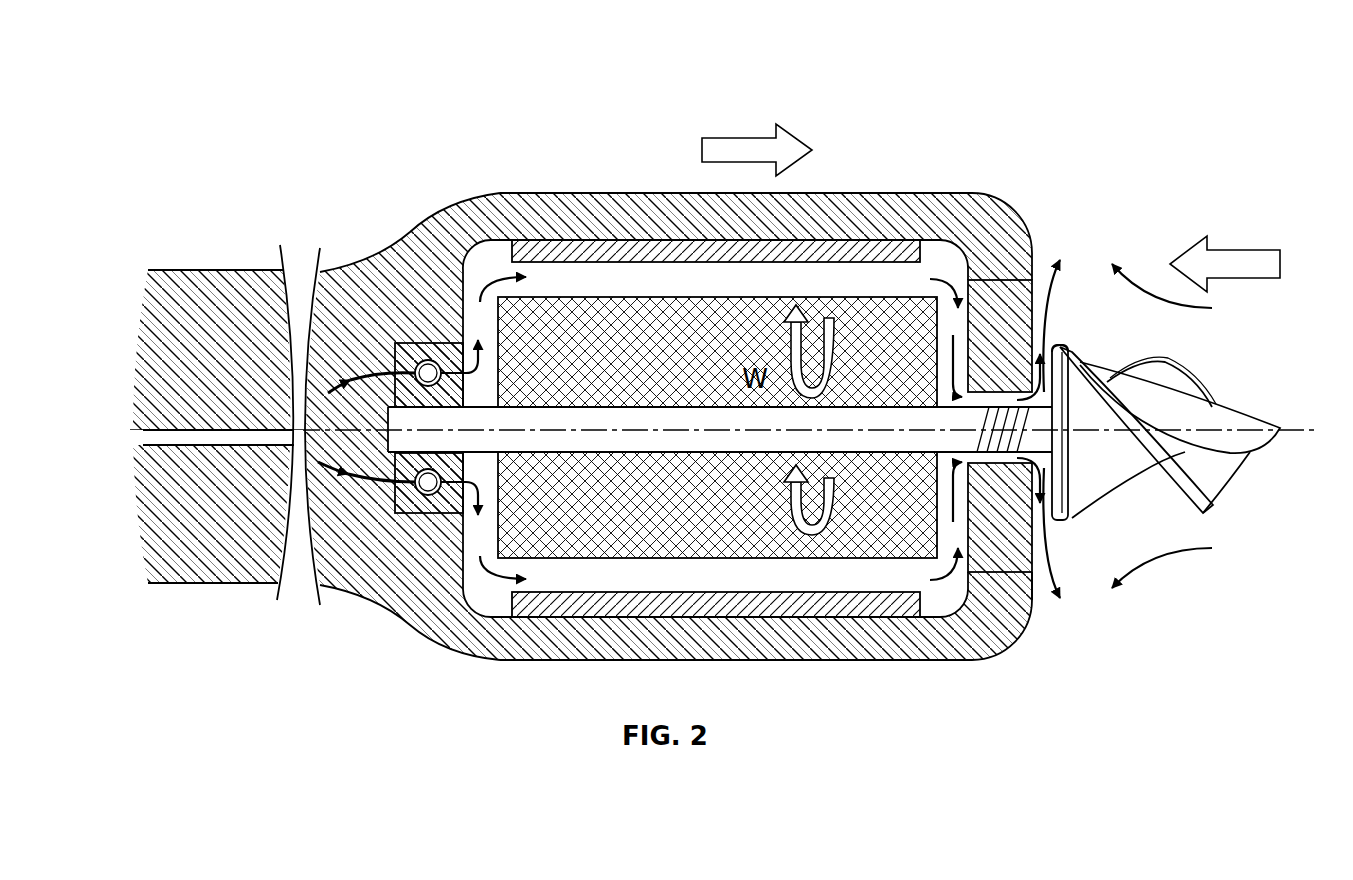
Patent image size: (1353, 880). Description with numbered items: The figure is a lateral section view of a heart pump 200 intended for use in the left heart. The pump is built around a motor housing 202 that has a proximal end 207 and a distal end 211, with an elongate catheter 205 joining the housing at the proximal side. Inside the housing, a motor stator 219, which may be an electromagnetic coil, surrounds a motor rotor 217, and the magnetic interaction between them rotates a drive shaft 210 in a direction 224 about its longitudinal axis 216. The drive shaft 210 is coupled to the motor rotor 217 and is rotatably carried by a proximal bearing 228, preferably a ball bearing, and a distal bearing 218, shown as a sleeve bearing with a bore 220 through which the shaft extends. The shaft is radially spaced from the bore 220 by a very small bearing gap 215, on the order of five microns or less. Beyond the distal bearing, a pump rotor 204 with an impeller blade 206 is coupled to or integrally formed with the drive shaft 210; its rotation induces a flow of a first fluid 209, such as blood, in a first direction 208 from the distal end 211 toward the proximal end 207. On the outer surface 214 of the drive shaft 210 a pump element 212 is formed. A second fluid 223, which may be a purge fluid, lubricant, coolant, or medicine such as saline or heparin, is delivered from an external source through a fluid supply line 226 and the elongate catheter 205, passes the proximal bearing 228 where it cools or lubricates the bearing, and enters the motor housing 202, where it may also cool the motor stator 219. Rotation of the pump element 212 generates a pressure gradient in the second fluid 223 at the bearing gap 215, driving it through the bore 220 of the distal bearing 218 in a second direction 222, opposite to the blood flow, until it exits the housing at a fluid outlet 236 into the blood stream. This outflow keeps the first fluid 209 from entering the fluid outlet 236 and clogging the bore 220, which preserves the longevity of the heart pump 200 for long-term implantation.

The heart pump 200 is at (425, 92).
The motor housing 202 is at (836, 206).
The pump rotor 204 is at (1262, 376).
The elongate catheter 205 is at (192, 290).
The impeller blade 206 is at (1203, 397).
The proximal end 207 is at (408, 236).
The first direction 208 is at (1241, 248).
The first fluid 209 is at (1177, 545).
The drive shaft 210 is at (887, 443).
The distal end 211 is at (1022, 235).
The pump element 212 is at (953, 582).
The outer surface 214 is at (1070, 423).
The bearing gap 215 is at (985, 458).
The longitudinal axis 216 is at (1283, 428).
The motor rotor 217 is at (597, 323).
The distal bearing 218 is at (1037, 542).
The motor stator 219 is at (558, 238).
The bore 220 is at (986, 612).
The second direction 222 is at (748, 133).
The second fluid 223 is at (1047, 563).
The direction 224 is at (847, 454).
The fluid supply line 226 is at (336, 478).
The proximal bearing 228 is at (397, 515).
The fluid outlet 236 is at (1054, 345).